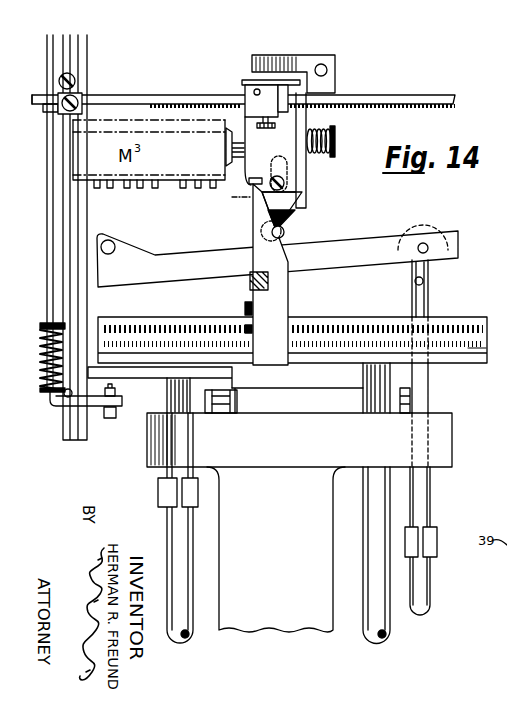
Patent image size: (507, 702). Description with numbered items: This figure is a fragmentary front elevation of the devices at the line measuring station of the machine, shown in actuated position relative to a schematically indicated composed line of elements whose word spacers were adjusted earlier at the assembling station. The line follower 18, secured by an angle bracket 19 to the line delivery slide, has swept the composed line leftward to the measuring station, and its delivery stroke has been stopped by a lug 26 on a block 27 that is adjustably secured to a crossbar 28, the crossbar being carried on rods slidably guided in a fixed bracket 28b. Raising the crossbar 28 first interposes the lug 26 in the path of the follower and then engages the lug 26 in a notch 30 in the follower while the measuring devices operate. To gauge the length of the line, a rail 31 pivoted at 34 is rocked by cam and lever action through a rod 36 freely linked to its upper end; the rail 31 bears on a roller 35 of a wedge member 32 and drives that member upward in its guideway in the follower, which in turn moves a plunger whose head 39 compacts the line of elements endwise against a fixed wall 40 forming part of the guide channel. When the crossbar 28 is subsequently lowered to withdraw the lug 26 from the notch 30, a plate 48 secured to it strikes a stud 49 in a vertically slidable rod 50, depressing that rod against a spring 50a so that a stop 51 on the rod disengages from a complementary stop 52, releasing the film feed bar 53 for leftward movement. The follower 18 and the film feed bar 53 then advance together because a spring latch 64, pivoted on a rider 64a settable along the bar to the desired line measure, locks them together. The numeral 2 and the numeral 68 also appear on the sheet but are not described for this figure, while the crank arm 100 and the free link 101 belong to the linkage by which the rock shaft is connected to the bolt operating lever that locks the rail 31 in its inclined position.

The scale graduation 2 is at (487, 343).
The line follower 18 is at (297, 170).
The angle bracket 19 is at (306, 58).
The lug 26 is at (246, 198).
The block 27 is at (290, 298).
The crossbar 28 is at (470, 317).
The fixed bracket 28b is at (449, 438).
The notch 30 is at (256, 178).
The rail 31 is at (413, 235).
The wedge member 32 is at (299, 211).
The pivot 34 is at (115, 247).
The roller 35 is at (285, 235).
The rod 36 is at (430, 392).
The head 39 is at (227, 150).
The fixed wall 40 is at (80, 207).
The plate 48 is at (122, 372).
The stud 49 is at (116, 408).
The vertically slidable rod 50 is at (57, 406).
The spring 50a is at (62, 330).
The stop 51 is at (47, 94).
The complementary stop 52 is at (81, 93).
The film feed bar 53 is at (128, 95).
The spring latch 64 is at (250, 81).
The rider 64a is at (244, 93).
The terminal pins 68 is at (187, 190).
The crank arm 100 is at (225, 390).
The free link 101 is at (207, 395).